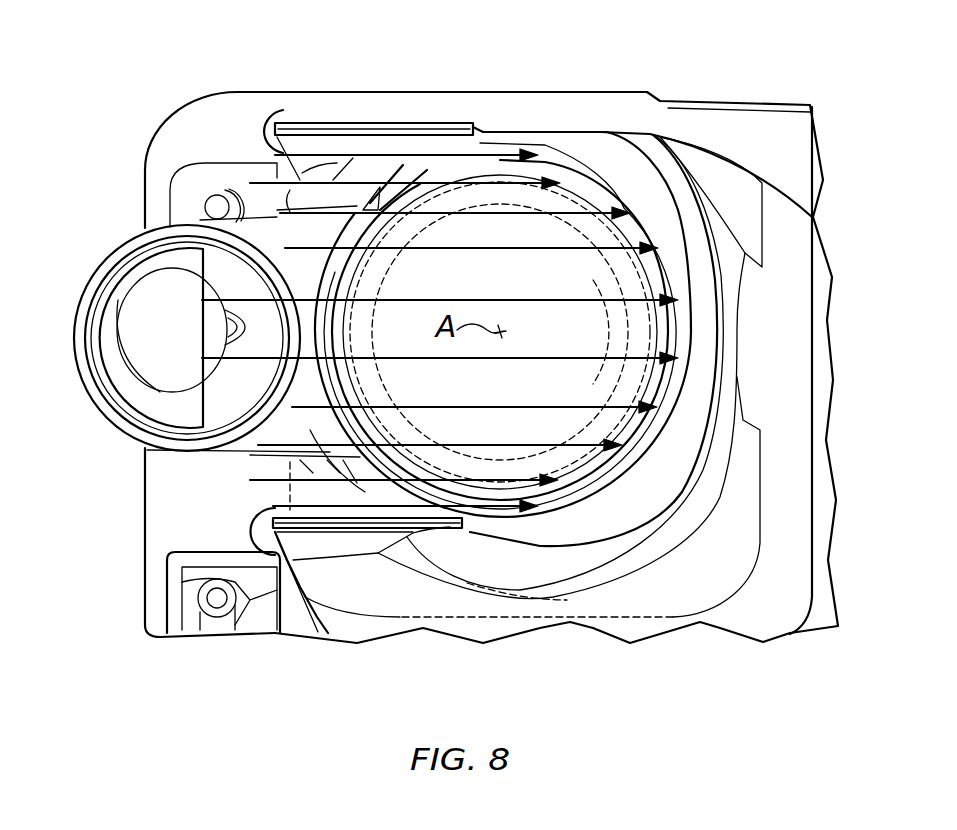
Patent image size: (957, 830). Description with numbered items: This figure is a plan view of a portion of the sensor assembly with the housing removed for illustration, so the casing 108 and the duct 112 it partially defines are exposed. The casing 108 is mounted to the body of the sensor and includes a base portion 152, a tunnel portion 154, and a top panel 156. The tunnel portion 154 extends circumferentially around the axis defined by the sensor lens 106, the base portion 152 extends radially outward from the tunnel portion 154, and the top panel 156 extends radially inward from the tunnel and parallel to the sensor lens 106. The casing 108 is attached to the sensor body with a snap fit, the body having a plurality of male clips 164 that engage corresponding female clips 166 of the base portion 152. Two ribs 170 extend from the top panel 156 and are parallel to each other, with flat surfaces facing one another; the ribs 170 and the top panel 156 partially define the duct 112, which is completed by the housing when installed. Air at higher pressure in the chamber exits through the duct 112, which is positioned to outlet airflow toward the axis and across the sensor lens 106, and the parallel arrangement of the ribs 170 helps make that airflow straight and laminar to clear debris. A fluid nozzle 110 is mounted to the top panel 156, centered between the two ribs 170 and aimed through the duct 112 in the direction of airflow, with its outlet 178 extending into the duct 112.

The sensor lens 106 is at (598, 328).
The casing 108 is at (817, 547).
The fluid nozzle 110 is at (155, 355).
The duct 112 is at (277, 493).
The base portion 152 is at (163, 498).
The tunnel portion 154 is at (778, 205).
The top panel 156 is at (267, 223).
The male clips 164 is at (200, 205).
The female clips 166 is at (230, 635).
The ribs 170 is at (337, 125).
The outlet 178 is at (245, 326).